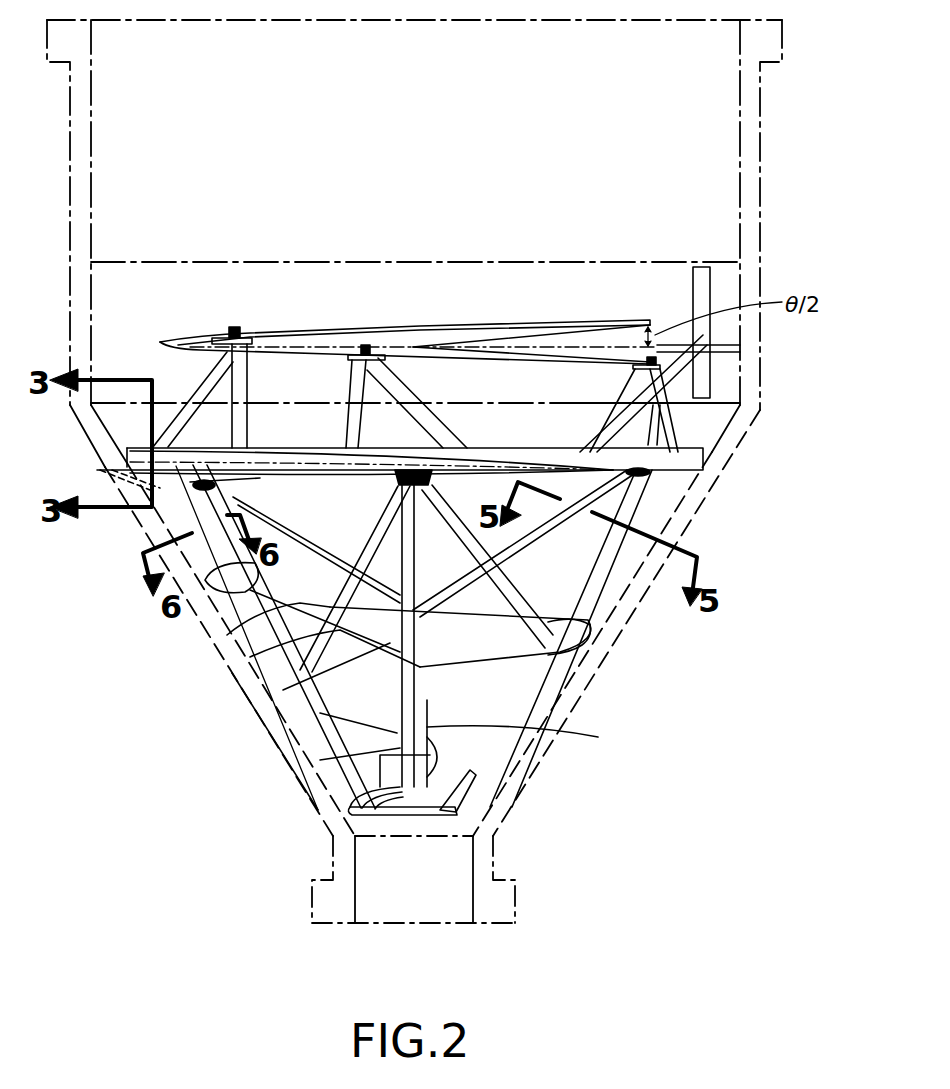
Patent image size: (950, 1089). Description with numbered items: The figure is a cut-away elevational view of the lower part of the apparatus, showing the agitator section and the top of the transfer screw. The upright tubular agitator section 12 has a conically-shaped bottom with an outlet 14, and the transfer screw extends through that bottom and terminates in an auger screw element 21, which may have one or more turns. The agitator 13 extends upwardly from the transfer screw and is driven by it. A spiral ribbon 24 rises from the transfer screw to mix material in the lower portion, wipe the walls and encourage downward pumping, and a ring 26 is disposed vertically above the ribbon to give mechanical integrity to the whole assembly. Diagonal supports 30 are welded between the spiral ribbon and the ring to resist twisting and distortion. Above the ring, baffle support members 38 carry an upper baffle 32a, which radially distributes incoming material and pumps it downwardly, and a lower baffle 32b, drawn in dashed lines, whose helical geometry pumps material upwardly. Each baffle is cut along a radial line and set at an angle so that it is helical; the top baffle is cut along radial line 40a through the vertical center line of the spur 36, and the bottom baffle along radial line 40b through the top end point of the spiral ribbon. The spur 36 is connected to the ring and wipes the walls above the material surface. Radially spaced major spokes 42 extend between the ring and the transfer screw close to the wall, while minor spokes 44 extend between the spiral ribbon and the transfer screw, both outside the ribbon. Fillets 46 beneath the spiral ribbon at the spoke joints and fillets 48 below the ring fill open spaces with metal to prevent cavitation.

The agitator section 12 is at (700, 522).
The agitator 13 is at (283, 690).
The outlet 14 is at (355, 846).
The auger screw element 21 is at (395, 755).
The spiral ribbon 24 is at (227, 635).
The ring 26 is at (703, 462).
The diagonal supports 30 is at (250, 657).
The upper baffle 32a is at (645, 320).
The lower baffle 32b is at (663, 428).
The spur 36 is at (712, 290).
The baffle support members 38 is at (185, 392).
The radial line 40a is at (718, 350).
The radial line 40b is at (112, 452).
The major spokes 42 is at (200, 506).
The minor spokes 44 is at (598, 737).
The fillets 46 is at (548, 647).
The fillets 48 is at (640, 474).